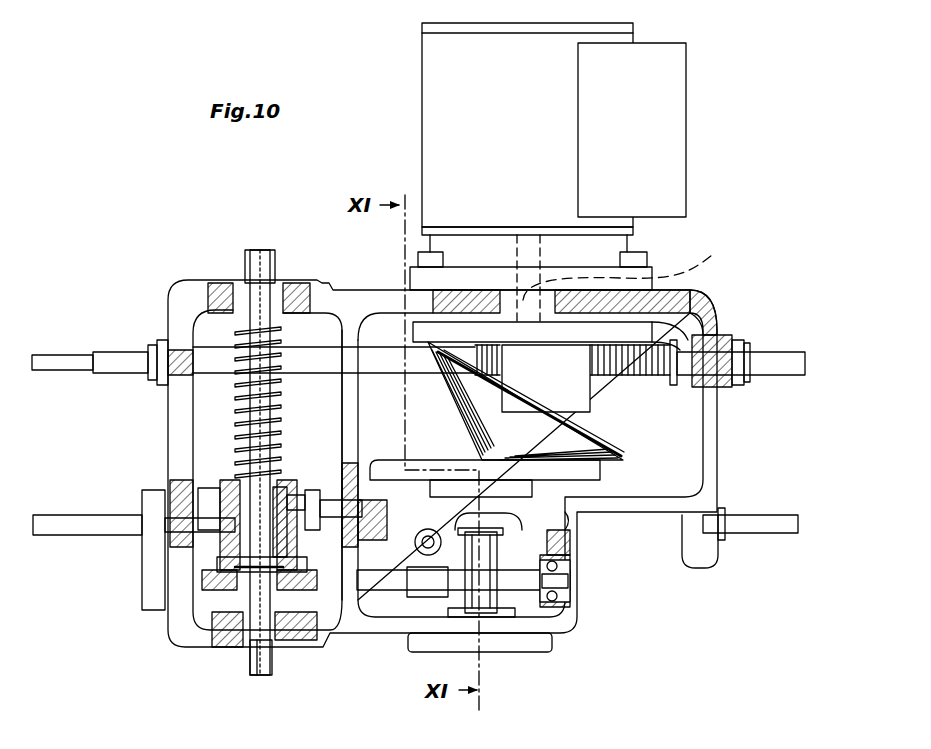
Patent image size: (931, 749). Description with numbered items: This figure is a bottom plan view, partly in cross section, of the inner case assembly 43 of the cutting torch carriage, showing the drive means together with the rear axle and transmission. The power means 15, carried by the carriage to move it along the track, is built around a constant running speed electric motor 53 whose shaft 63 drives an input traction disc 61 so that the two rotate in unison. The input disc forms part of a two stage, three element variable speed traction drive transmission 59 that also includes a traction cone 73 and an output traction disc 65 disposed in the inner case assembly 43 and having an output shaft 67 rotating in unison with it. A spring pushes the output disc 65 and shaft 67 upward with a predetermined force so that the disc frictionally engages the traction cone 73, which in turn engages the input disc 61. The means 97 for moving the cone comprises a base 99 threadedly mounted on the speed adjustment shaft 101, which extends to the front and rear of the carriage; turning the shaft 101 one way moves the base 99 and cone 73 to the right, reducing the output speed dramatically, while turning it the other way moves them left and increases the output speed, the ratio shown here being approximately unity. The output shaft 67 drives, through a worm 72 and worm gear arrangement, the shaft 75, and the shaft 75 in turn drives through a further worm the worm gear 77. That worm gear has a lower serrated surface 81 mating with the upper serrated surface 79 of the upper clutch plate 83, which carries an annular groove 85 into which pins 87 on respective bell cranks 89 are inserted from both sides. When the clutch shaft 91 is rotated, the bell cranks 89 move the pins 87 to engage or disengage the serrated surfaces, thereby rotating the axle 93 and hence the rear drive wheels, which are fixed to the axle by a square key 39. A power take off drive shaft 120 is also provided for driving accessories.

The power means 15 is at (178, 220).
The electric motor 53 is at (473, 108).
The inner case assembly 43 is at (360, 310).
The shaft of the motor 63 is at (625, 265).
The input traction disc 61 is at (695, 328).
The speed adjustment shaft 101 is at (773, 355).
The means for moving the traction cone 97 is at (690, 404).
The base 99 is at (537, 375).
The traction cone 73 is at (585, 430).
The output traction disc 65 is at (600, 467).
The output shaft 67 is at (527, 493).
The variable speed traction drive transmission 59 is at (610, 478).
The clutch shaft 91 is at (775, 535).
The axle 93 is at (260, 622).
The square key 39 is at (261, 668).
The worm gear 77 is at (213, 600).
The lower serrated surface 81 is at (297, 613).
The upper serrated surface 79 is at (215, 558).
The upper clutch plate 83 is at (290, 487).
The annular groove 85 is at (300, 500).
The pins 87 is at (303, 512).
The bell cranks 89 is at (313, 527).
The power take off drive shaft 120 is at (420, 540).
The worm 72 is at (483, 602).
The shaft 75 is at (517, 580).